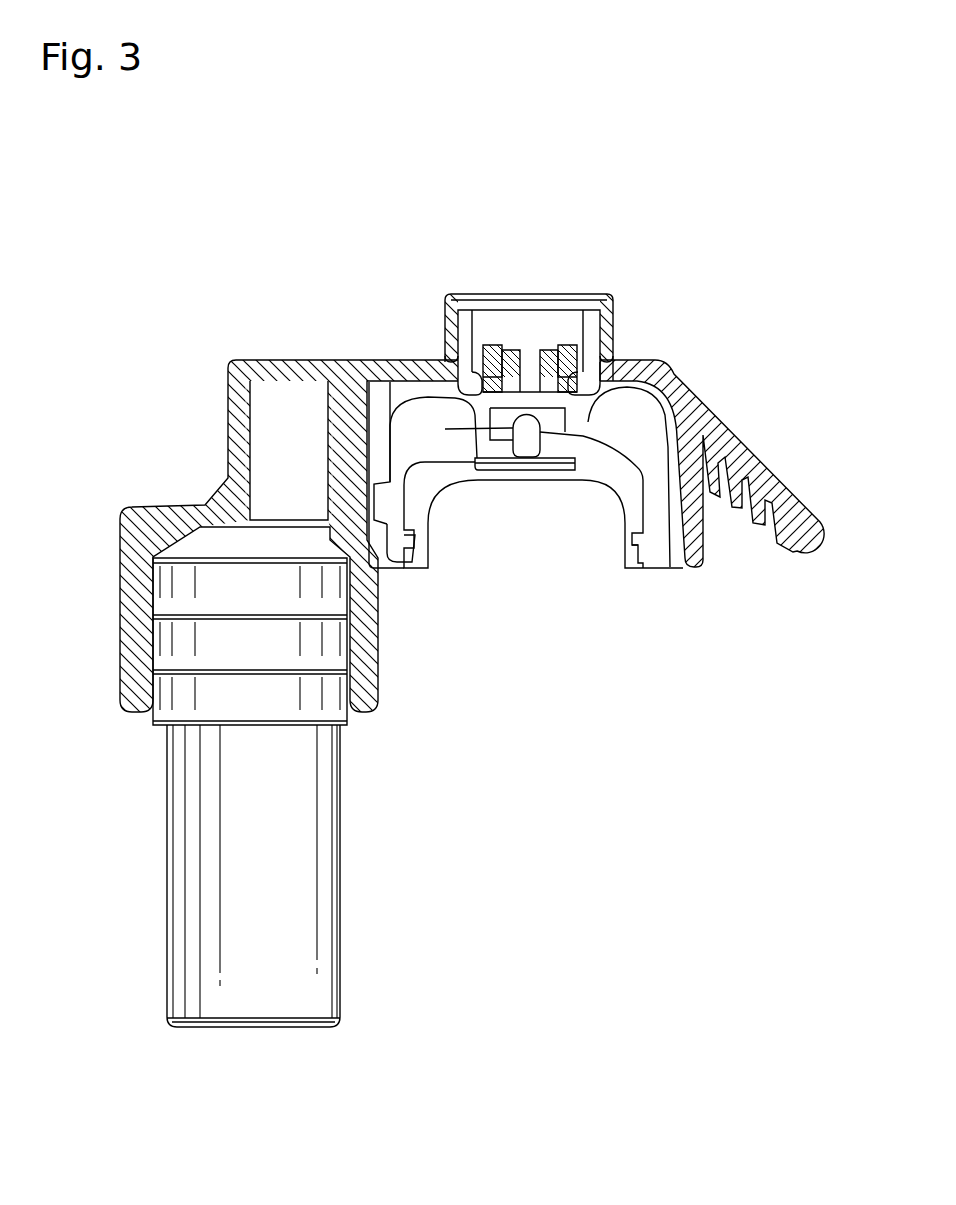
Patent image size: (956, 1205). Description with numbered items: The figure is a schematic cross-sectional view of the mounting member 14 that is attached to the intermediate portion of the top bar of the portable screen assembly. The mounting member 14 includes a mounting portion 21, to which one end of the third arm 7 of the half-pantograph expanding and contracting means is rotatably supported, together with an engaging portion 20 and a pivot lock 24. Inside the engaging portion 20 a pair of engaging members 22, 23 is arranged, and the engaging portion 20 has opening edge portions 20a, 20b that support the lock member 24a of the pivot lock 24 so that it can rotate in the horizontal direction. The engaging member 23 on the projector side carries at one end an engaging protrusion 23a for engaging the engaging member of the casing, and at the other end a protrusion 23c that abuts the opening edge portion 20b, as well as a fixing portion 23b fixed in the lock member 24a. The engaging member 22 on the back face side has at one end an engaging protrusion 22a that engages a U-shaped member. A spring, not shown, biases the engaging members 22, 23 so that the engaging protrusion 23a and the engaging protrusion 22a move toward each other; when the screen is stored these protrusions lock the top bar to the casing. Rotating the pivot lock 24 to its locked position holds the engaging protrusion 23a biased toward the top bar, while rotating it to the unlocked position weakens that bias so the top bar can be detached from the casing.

The third arm 7 is at (340, 940).
The mounting member 14 is at (288, 308).
The engaging portion 20 is at (698, 413).
The opening edge portion 20a is at (630, 360).
The opening edge portion 20b is at (453, 373).
The mounting portion 21 is at (238, 395).
The engaging member 22 is at (392, 508).
The engaging protrusion 22a is at (398, 550).
The engaging member 23 is at (653, 510).
The engaging protrusion 23a is at (642, 548).
The fixing portion 23b is at (528, 362).
The protrusion 23c is at (477, 415).
The pivot lock 24 is at (613, 328).
The lock member 24a is at (546, 348).